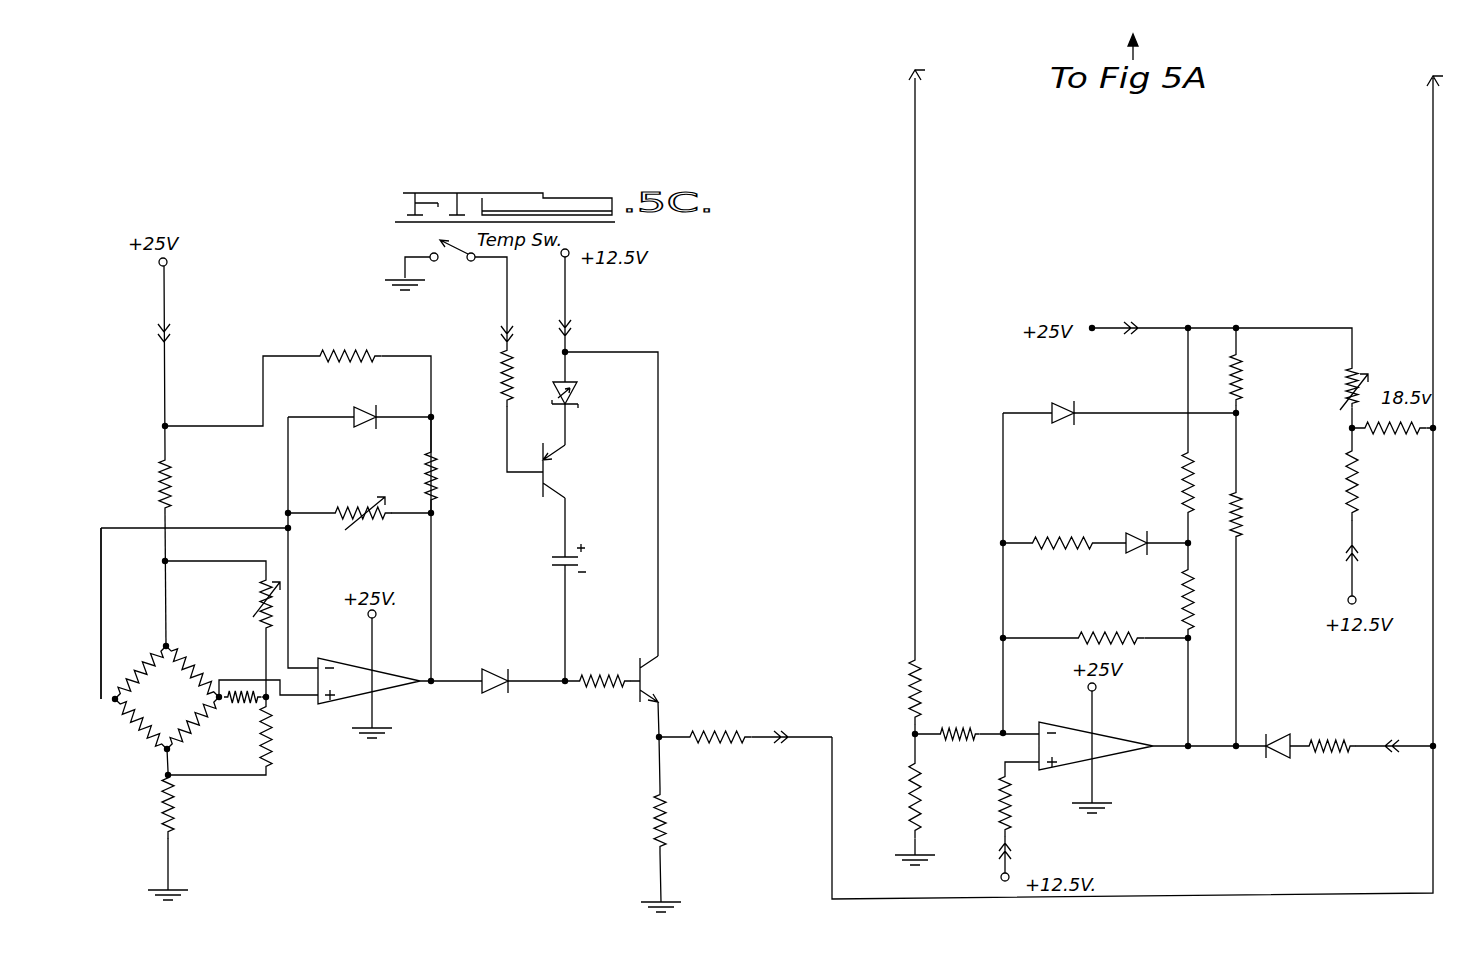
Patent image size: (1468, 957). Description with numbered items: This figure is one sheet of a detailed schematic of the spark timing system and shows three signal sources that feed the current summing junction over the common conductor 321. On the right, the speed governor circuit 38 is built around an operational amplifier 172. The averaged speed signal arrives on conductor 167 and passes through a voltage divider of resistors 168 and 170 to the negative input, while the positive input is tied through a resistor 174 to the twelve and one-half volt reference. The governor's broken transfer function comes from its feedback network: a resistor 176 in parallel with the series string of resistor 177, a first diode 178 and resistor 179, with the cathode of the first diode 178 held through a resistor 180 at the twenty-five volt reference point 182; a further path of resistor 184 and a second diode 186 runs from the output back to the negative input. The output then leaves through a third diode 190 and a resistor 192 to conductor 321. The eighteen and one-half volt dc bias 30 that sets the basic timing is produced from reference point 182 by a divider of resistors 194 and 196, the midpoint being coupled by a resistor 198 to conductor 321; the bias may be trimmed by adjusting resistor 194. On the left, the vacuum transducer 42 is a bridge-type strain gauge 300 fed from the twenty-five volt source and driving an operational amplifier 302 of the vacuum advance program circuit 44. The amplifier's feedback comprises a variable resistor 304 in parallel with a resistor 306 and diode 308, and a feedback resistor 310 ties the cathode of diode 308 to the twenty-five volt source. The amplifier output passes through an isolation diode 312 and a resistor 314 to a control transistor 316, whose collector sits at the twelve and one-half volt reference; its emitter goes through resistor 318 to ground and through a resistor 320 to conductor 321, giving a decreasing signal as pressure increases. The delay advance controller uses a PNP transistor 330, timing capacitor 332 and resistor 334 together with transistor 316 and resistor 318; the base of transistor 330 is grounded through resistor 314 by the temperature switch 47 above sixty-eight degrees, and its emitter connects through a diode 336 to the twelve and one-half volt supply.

The 18.5 volt dc bias 30 is at (1390, 343).
The speed governor circuit 38 is at (989, 443).
The vacuum transducer 42 is at (137, 513).
The vacuum advance program circuit 44 is at (369, 770).
The temperature switch 47 is at (430, 273).
The conductor 167 is at (914, 463).
The resistor 168 is at (919, 689).
The resistor 170 is at (912, 798).
The operational amplifier 172 is at (1120, 748).
The resistor 174 is at (1013, 811).
The resistor 176 is at (1090, 599).
The resistor 177 is at (1188, 596).
The first diode 178 is at (1136, 528).
The resistor 179 is at (1065, 534).
The resistor 180 is at (1188, 465).
The 25 volt reference point 182 is at (1097, 325).
The resistor 184 is at (1247, 516).
The second diode 186 is at (1062, 401).
The third diode 190 is at (1278, 734).
The resistor 192 is at (1322, 739).
The resistor 194 is at (1345, 373).
The resistor 196 is at (1347, 506).
The resistor 198 is at (1392, 457).
The bridge-type strain gauge 300 is at (168, 670).
The operational amplifier 302 is at (394, 672).
The variable resistor 304 is at (374, 510).
The resistor 306 is at (428, 454).
The diode 308 is at (358, 402).
The feedback resistor 310 is at (354, 351).
The isolation diode 312 is at (497, 665).
The resistor 314 is at (606, 690).
The control transistor 316 is at (650, 672).
The resistor 318 is at (663, 836).
The resistor 320 is at (718, 730).
The conductor 321 is at (1158, 896).
The PNP transistor 330 is at (548, 476).
The timing capacitor 332 is at (578, 564).
The resistor 334 is at (502, 363).
The diode 336 is at (576, 392).